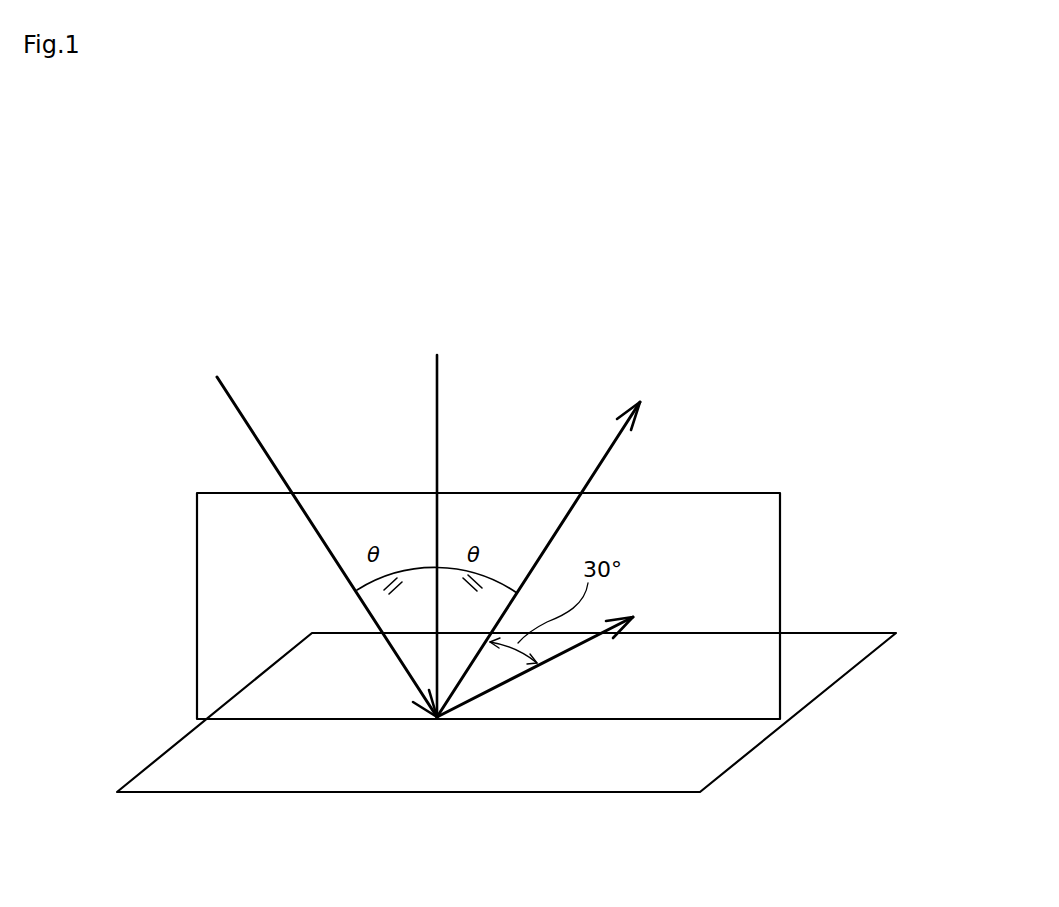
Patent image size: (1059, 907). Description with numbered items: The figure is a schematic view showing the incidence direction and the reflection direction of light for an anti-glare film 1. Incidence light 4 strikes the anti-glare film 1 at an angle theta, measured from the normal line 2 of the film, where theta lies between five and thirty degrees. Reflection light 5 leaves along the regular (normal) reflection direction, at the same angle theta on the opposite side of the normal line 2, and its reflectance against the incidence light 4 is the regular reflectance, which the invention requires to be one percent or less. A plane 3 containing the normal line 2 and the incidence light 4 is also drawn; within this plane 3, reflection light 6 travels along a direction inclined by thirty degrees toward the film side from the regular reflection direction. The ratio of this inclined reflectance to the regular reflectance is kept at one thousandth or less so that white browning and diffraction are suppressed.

The anti-glare film 1 is at (188, 792).
The normal line of anti-glare film 2 is at (437, 382).
The plane including normal line and incidence light 3 is at (780, 557).
The incidence light 4 is at (233, 397).
The reflection light along normal reflection direction 5 is at (600, 467).
The reflection light along direction inclined by 30° 6 is at (547, 663).